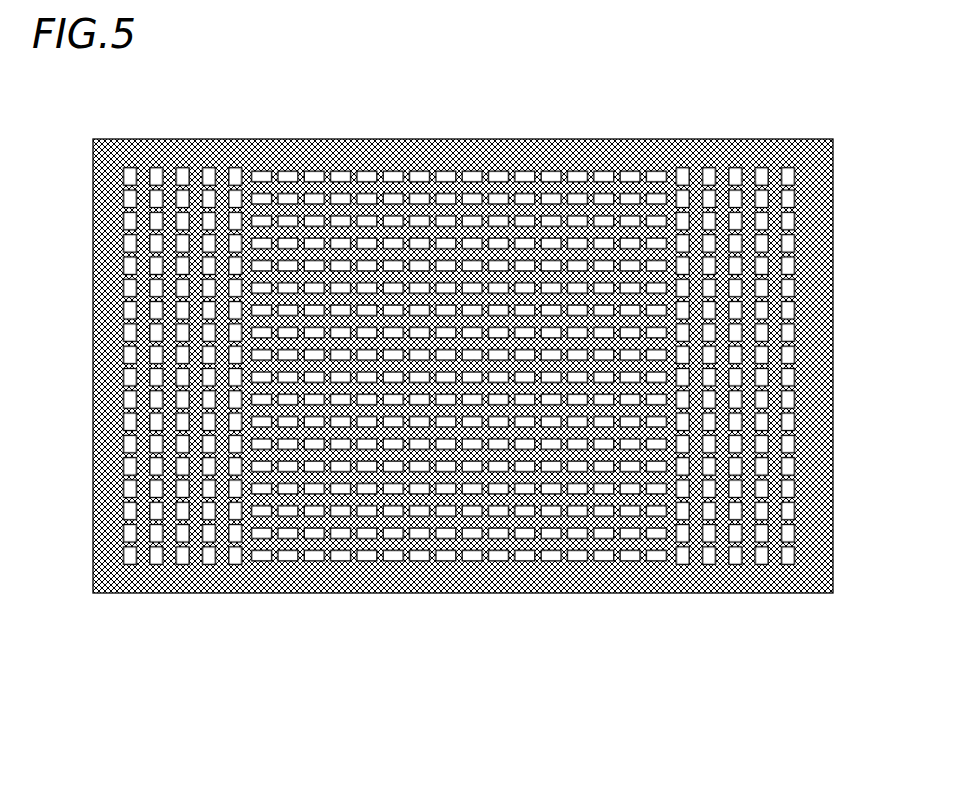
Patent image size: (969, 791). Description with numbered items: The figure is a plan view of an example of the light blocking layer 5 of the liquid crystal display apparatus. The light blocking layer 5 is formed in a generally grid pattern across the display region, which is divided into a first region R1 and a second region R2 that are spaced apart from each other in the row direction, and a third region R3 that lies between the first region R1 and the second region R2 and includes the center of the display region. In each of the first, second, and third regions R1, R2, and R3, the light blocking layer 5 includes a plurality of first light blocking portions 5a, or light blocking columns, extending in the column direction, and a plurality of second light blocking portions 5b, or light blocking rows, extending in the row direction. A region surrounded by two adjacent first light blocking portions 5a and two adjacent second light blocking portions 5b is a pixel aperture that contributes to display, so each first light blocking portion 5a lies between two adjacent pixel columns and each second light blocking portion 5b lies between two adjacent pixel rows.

The light blocking layer 5 is at (483, 348).
The first light blocking portion 5a is at (459, 376).
The second light blocking portion 5b is at (208, 140).
The first region R1 is at (188, 597).
The second region R2 is at (738, 597).
The third region R3 is at (460, 597).